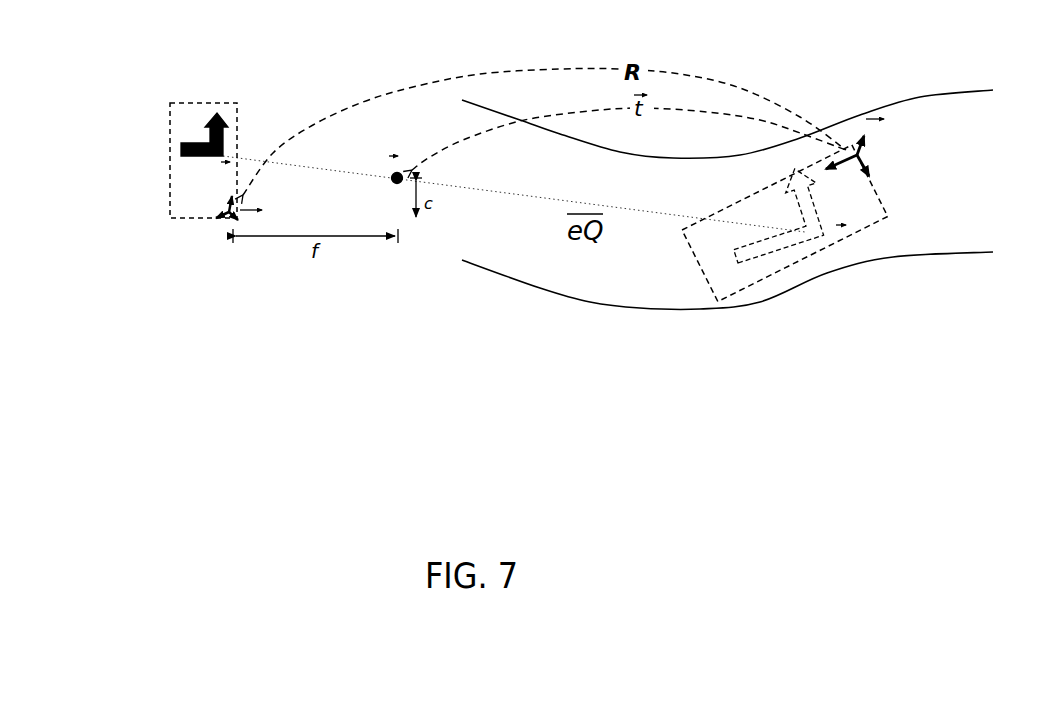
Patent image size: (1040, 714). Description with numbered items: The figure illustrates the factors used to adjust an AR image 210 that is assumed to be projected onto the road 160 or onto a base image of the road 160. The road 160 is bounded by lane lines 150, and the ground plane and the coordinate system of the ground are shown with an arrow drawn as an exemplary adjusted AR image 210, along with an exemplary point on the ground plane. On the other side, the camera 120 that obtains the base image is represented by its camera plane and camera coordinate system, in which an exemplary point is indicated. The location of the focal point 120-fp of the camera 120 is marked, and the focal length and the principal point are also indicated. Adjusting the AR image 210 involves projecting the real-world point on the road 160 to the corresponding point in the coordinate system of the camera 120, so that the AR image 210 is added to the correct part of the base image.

The camera 120 is at (197, 222).
The focal point 120-fp is at (391, 190).
The lane lines 150 is at (952, 93).
The road 160 is at (982, 131).
The AR image 210 is at (809, 262).